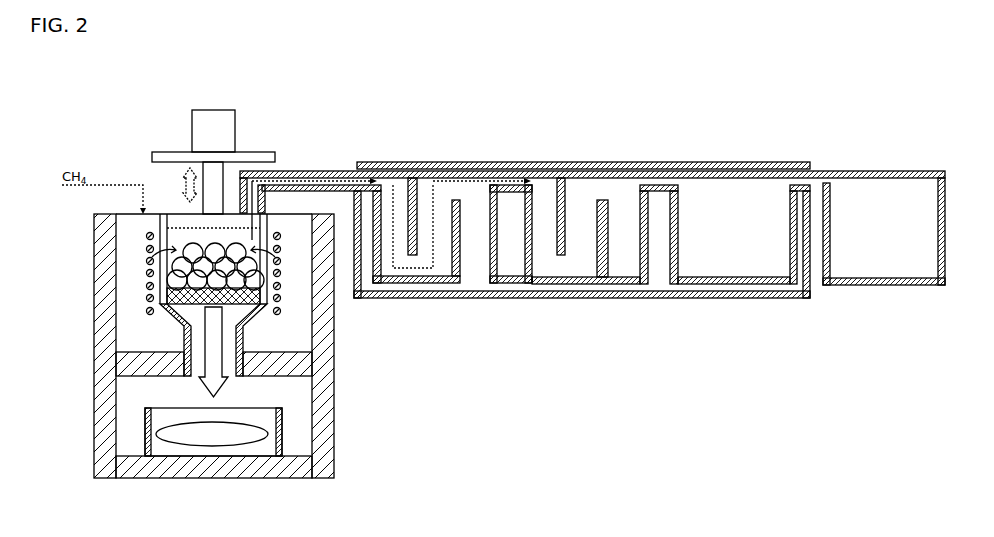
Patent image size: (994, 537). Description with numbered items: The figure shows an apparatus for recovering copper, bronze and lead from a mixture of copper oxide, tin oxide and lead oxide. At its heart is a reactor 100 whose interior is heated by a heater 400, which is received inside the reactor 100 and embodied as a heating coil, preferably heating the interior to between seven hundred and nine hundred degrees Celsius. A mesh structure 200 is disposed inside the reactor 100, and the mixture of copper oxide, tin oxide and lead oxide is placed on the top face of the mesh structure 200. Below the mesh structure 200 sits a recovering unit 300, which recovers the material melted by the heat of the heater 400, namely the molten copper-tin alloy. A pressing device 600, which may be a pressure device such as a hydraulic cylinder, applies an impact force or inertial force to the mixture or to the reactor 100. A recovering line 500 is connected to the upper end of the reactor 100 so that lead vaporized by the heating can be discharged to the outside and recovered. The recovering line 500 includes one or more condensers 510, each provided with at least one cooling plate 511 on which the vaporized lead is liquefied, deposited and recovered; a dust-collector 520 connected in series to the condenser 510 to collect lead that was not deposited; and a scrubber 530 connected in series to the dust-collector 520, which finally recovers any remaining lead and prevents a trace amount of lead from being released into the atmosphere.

The reactor 100 is at (136, 227).
The mesh structure 200 is at (243, 312).
The recovering unit 300 is at (279, 429).
The heater 400 is at (146, 311).
The recovering line 500 is at (317, 171).
The condenser 510 is at (497, 263).
The cooling plate 511 is at (605, 201).
The dust-collector 520 is at (735, 285).
The scrubber 530 is at (883, 286).
The pressing device 600 is at (237, 128).